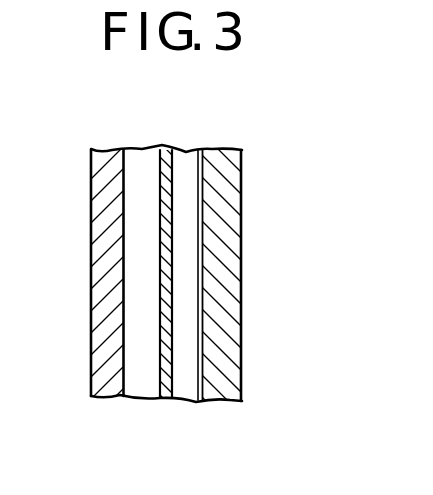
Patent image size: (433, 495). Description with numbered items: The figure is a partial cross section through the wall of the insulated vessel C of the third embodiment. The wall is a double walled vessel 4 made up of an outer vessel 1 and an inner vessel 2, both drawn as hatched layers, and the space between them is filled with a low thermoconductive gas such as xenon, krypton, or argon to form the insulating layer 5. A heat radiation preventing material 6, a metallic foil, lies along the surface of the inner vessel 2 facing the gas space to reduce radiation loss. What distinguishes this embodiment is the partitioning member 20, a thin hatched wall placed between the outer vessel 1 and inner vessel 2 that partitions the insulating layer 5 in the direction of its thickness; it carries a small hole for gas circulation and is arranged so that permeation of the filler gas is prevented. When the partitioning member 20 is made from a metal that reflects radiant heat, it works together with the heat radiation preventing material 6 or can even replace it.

The outer vessel 1 is at (108, 381).
The inner vessel 2 is at (223, 384).
The double walled vessel 4 is at (112, 443).
The insulating layer 5 is at (189, 158).
The heat radiation preventing material 6 is at (205, 218).
The partitioning member 20 is at (160, 282).
The insulated vessel C is at (262, 154).